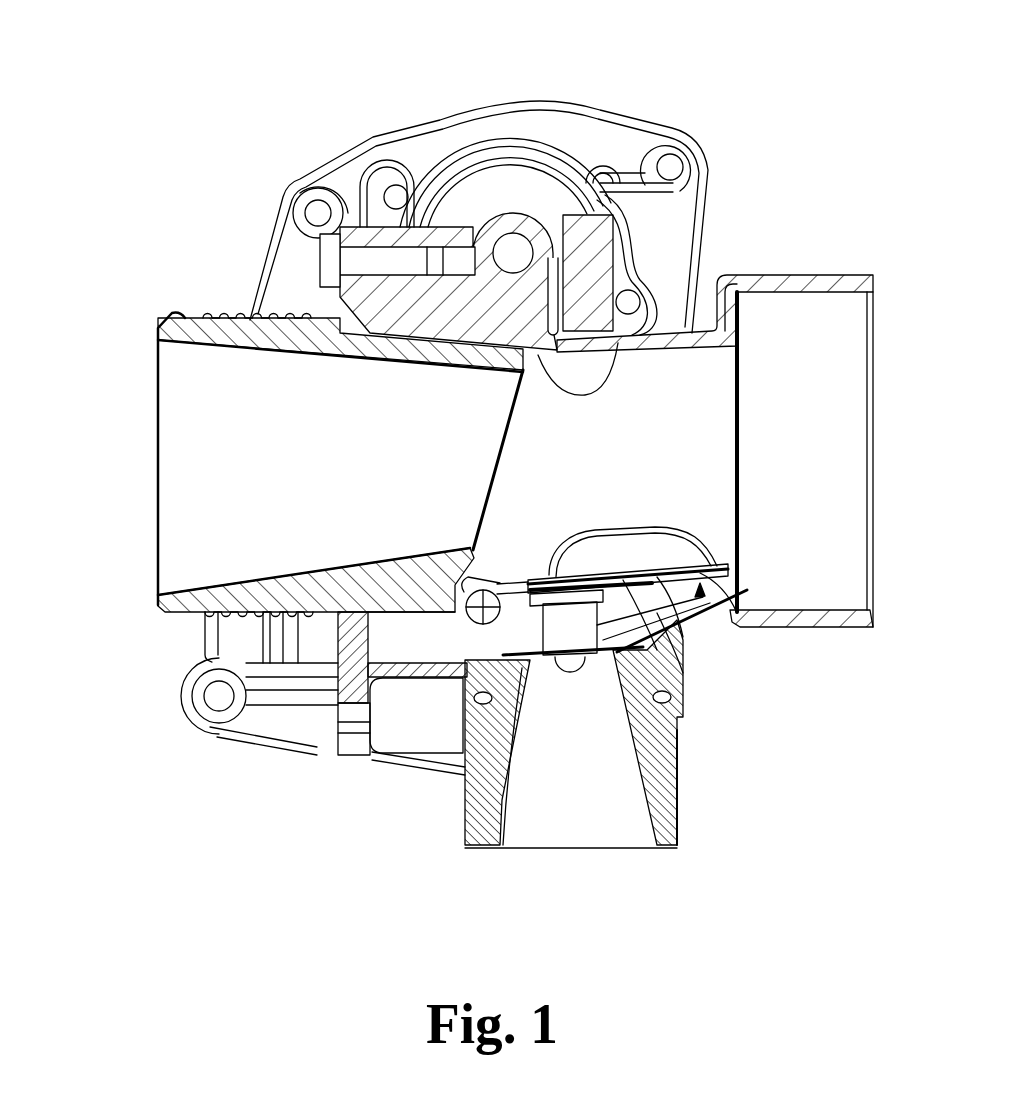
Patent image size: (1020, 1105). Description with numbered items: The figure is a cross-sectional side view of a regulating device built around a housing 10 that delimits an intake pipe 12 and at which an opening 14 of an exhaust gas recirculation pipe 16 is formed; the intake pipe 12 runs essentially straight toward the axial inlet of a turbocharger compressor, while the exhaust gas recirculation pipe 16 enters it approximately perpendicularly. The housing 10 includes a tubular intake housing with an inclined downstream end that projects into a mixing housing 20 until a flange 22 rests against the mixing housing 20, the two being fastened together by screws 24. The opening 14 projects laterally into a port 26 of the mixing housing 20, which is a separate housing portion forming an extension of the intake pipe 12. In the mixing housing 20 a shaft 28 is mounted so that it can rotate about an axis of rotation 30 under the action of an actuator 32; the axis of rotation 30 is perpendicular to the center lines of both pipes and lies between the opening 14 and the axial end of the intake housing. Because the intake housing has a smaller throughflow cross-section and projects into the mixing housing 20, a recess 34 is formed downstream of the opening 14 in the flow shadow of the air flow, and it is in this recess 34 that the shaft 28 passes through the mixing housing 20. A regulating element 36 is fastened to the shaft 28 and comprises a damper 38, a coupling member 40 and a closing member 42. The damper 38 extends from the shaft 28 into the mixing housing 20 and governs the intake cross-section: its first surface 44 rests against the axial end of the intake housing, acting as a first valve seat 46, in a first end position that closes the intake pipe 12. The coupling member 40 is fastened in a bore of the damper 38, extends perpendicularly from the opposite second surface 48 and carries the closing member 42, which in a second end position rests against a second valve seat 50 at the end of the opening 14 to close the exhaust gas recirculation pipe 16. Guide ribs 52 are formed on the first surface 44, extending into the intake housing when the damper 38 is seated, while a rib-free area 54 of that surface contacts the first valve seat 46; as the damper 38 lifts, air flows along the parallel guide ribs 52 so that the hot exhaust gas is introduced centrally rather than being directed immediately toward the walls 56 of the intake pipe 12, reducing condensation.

The housing 10 is at (397, 356).
The intake pipe 12 is at (340, 459).
The opening 14 is at (606, 647).
The exhaust gas recirculation pipe 16 is at (571, 818).
The mixing housing 20 is at (585, 252).
The flange 22 is at (250, 305).
The screws 24 is at (313, 184).
The port 26 is at (465, 780).
The shaft 28 is at (465, 632).
The axis of rotation 30 is at (418, 550).
The actuator 32 is at (500, 163).
The recess 34 is at (402, 647).
The regulating element 36 is at (680, 643).
The damper 38 is at (730, 630).
The coupling member 40 is at (677, 723).
The closing member 42 is at (677, 753).
The first surface 44 is at (721, 518).
The first valve seat 46 is at (660, 318).
The second surface 48 is at (717, 653).
The second valve seat 50 is at (503, 840).
The guide ribs 52 is at (633, 540).
The area 54 is at (533, 562).
The walls 56 is at (687, 350).